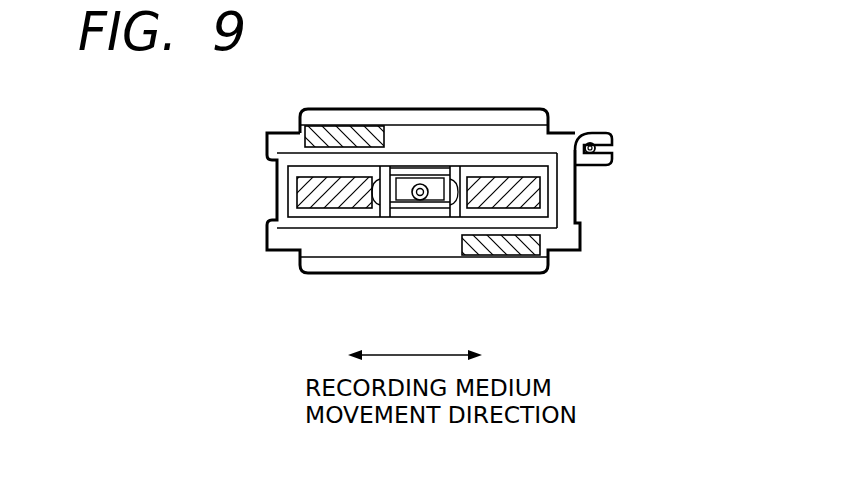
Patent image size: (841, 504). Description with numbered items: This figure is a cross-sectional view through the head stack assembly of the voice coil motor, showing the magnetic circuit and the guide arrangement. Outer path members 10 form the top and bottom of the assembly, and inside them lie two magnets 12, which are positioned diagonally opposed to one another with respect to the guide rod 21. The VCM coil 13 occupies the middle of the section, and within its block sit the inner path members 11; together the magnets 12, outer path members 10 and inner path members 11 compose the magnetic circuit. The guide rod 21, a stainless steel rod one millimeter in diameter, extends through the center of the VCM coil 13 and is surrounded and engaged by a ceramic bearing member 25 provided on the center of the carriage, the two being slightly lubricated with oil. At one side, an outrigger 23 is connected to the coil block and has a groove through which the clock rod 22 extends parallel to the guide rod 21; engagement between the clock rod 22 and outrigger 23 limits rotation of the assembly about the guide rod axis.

The outer path member 10 is at (440, 108).
The inner path member 11 is at (510, 180).
The magnet 12 is at (348, 135).
The VCM coil 13 is at (277, 178).
The guide rod 21 is at (432, 198).
The clock rod 22 is at (604, 148).
The outrigger 23 is at (603, 162).
The bearing member 25 is at (403, 198).